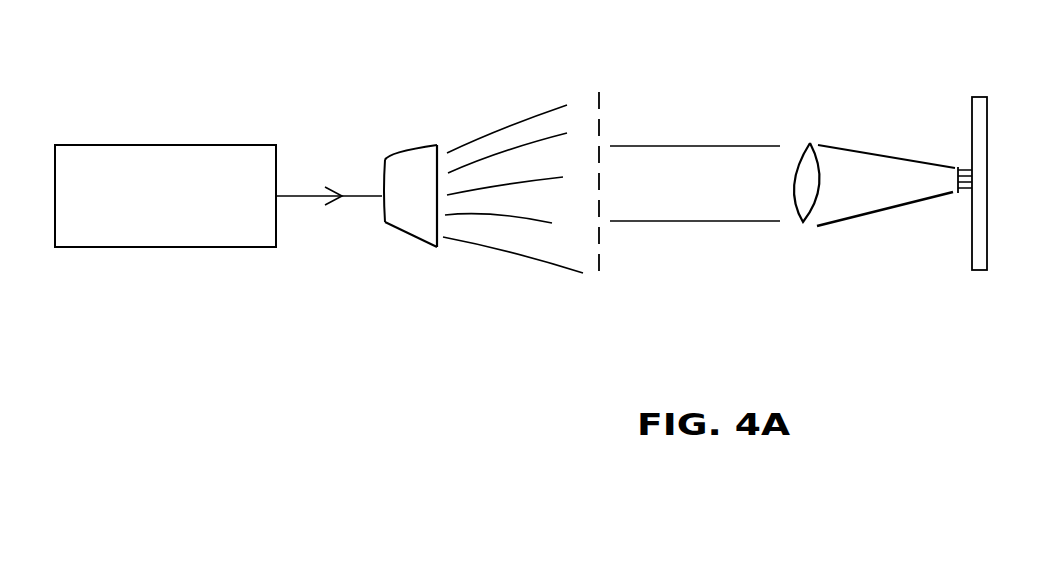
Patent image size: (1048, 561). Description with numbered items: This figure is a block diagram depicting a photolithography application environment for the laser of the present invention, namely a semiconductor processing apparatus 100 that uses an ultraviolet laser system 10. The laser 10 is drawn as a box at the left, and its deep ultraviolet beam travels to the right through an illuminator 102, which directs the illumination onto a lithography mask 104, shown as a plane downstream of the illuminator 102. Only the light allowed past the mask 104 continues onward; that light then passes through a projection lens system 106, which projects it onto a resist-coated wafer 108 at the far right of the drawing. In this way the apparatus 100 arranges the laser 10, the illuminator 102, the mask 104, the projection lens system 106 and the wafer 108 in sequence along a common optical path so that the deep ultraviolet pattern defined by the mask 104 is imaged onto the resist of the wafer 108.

The ultraviolet laser system 10 is at (157, 137).
The semiconductor processing apparatus 100 is at (253, 295).
The illuminator 102 is at (407, 143).
The lithography mask 104 is at (599, 81).
The projection lens system 106 is at (868, 140).
The resist-coated wafer 108 is at (998, 98).